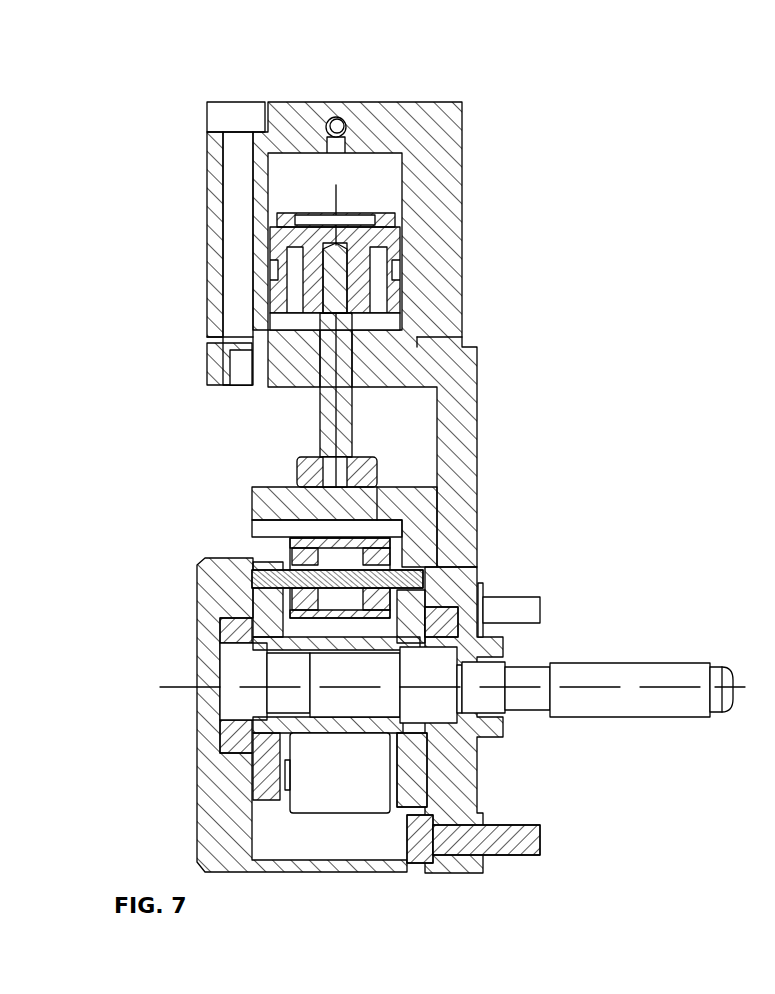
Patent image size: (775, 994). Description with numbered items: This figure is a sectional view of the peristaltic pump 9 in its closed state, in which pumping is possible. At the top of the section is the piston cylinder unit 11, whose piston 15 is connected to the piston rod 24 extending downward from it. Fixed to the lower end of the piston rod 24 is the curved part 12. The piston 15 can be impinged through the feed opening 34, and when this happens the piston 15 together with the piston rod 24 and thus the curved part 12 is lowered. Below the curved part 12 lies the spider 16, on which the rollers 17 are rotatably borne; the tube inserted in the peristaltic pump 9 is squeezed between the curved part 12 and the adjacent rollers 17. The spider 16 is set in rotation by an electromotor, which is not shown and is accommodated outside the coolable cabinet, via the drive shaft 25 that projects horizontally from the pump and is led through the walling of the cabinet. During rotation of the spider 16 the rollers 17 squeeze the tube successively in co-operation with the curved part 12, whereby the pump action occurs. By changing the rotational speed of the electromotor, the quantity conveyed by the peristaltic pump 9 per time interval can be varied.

The peristaltic pump 9 is at (505, 157).
The piston cylinder unit 11 is at (462, 217).
The feed opening 34 is at (329, 116).
The piston 15 is at (276, 220).
The piston rod 24 is at (327, 412).
The curved part 12 is at (257, 497).
The rollers 17 is at (330, 533).
The spider 16 is at (255, 597).
The drive shaft 25 is at (590, 670).